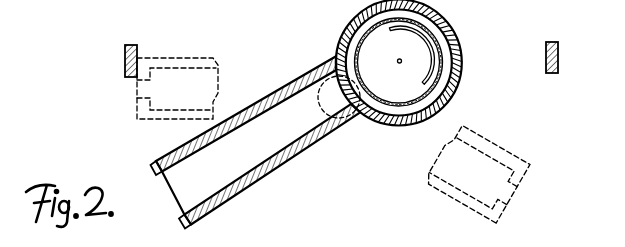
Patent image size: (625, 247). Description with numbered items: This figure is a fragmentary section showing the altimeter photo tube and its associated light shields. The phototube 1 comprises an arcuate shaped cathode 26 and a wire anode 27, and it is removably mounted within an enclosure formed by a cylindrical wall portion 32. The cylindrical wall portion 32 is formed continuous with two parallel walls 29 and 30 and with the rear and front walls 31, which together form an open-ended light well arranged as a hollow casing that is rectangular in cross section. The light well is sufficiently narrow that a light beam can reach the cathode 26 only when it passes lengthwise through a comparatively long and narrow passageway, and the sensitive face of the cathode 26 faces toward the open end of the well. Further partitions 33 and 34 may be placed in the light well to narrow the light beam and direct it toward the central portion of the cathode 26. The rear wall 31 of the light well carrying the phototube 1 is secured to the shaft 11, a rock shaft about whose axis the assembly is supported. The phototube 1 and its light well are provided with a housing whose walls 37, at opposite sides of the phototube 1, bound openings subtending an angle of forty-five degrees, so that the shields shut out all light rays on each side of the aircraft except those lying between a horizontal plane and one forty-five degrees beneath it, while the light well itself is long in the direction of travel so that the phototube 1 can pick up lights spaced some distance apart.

The phototube 1 is at (441, 88).
The shaft 11 is at (339, 130).
The cathode 26 is at (418, 40).
The wire anode 27 is at (398, 63).
The wall 29 is at (190, 146).
The wall 30 is at (288, 174).
The rear and front walls 31 is at (218, 177).
The cylindrical wall portion 32 is at (462, 57).
The partition 33 is at (182, 217).
The partition 34 is at (354, 113).
The walls 37 is at (125, 60).